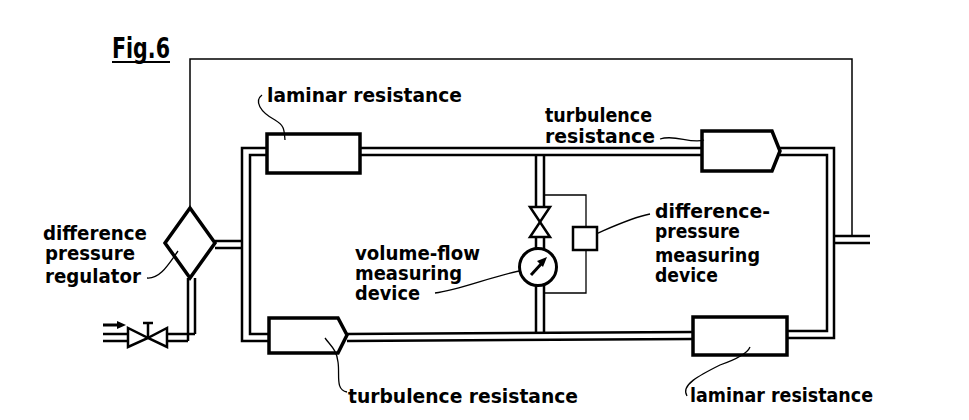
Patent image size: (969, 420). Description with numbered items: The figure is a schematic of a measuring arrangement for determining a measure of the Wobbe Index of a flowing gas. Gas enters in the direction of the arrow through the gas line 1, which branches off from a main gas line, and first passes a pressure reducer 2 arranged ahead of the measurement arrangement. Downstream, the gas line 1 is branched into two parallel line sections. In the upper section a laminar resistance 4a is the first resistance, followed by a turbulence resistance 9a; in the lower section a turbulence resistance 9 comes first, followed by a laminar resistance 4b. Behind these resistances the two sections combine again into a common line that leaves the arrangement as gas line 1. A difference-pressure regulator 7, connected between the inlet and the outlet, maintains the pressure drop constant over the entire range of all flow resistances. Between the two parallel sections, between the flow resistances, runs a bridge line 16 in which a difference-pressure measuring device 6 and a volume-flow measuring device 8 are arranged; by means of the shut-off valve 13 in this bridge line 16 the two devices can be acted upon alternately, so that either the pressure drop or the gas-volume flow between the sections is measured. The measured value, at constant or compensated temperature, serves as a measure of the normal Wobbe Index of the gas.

The gas line 1 is at (118, 343).
The pressure reducer 2 is at (168, 346).
The laminar resistance 4a is at (314, 174).
The laminar resistance 4b is at (749, 317).
The difference-pressure measuring device 6 is at (598, 240).
The difference-pressure regulator 7 is at (177, 228).
The volume-flow measuring device 8 is at (524, 283).
The turbulence resistance 9 is at (317, 356).
The turbulence resistance 9a is at (735, 131).
The shut-off valve 13 is at (530, 232).
The bridge line 16 is at (546, 178).